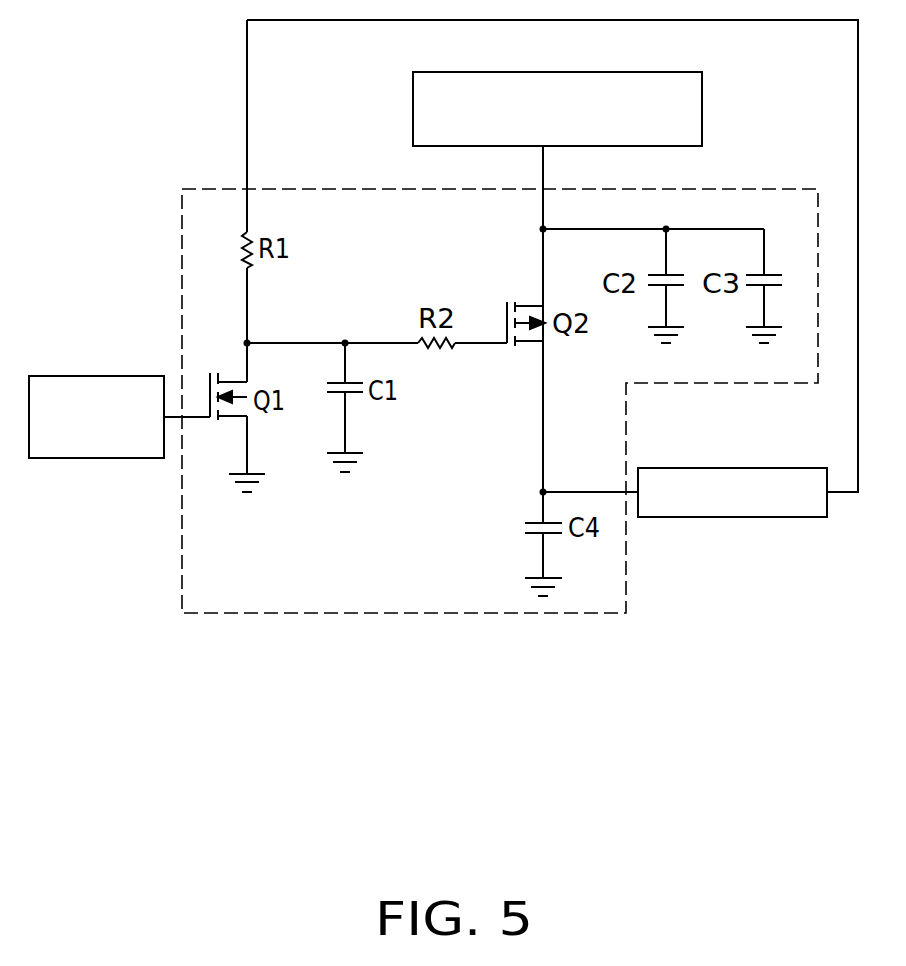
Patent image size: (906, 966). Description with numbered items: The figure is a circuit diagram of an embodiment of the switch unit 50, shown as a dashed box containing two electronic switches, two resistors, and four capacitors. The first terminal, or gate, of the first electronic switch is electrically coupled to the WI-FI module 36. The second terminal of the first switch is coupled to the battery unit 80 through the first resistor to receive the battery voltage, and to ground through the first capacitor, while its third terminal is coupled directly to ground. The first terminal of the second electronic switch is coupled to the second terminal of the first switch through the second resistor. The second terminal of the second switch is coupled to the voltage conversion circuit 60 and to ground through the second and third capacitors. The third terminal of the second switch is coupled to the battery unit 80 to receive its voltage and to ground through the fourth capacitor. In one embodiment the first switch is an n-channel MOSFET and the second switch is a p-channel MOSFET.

The WI-FI module 36 is at (113, 376).
The switch unit 50 is at (195, 189).
The voltage conversion circuit 60 is at (602, 72).
The battery unit 80 is at (698, 468).